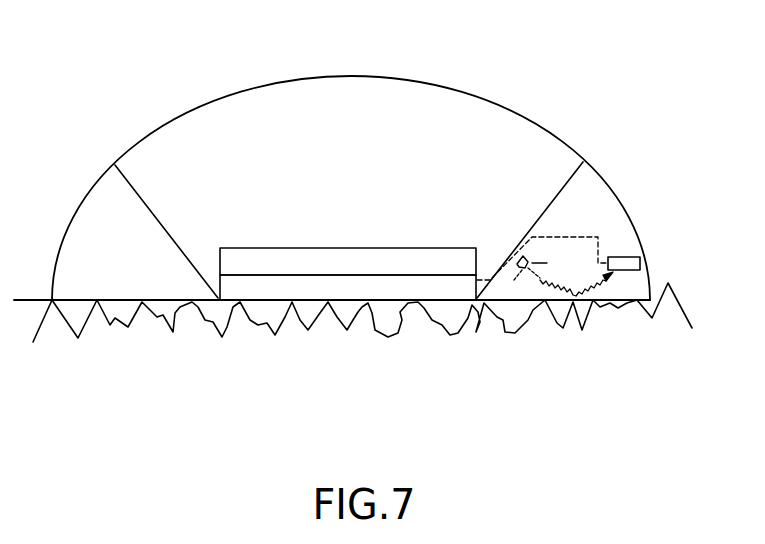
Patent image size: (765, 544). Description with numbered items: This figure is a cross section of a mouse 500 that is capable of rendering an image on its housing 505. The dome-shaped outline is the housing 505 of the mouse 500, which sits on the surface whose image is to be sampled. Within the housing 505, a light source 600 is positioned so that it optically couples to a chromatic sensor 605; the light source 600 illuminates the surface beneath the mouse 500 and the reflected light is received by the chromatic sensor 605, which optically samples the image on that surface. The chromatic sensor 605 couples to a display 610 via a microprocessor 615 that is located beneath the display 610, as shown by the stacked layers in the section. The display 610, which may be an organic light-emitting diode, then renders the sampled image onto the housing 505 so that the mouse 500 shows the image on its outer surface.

The mouse 500 is at (351, 157).
The housing 505 is at (235, 96).
The light source 600 is at (504, 285).
The chromatic sensor 605 is at (640, 263).
The display 610 is at (348, 261).
The microprocessor 615 is at (348, 287).